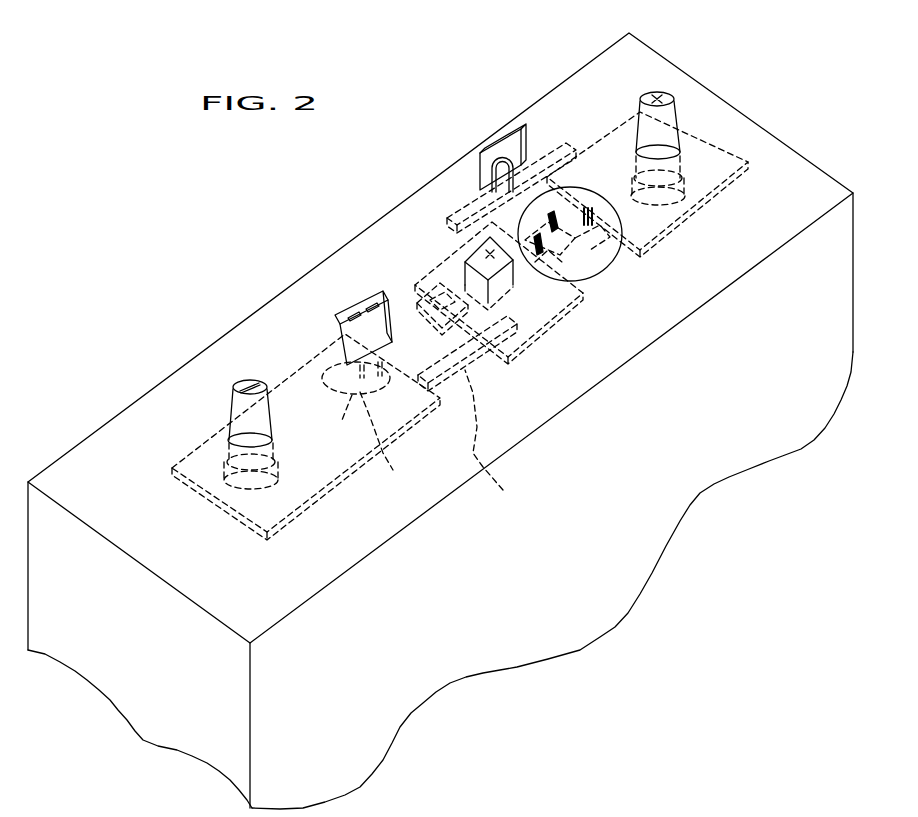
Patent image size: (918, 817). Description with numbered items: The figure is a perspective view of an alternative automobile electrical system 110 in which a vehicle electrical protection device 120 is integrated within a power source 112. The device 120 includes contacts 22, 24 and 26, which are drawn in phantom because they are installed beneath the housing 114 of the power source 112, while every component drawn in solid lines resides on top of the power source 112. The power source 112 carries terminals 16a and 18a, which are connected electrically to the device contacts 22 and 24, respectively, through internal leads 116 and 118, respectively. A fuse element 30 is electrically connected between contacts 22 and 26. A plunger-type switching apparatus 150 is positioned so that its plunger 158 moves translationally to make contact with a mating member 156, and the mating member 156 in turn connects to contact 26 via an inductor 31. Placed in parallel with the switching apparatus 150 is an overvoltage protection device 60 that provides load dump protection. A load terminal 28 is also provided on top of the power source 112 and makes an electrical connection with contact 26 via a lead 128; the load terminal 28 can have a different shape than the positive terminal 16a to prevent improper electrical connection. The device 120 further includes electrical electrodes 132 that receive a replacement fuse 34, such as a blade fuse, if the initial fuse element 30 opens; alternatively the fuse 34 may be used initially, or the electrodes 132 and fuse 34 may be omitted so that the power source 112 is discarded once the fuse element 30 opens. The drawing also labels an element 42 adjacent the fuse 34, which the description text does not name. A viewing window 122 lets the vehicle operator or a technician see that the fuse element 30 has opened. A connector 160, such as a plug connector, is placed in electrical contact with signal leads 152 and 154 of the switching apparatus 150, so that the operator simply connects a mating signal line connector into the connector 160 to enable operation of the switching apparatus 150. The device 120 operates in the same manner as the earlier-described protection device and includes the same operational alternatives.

The system 110 is at (440, 421).
The power source 112 is at (241, 643).
The housing 114 is at (417, 677).
The internal lead 116 is at (683, 167).
The internal lead 118 is at (227, 448).
The device 120 is at (167, 457).
The viewing window 122 is at (618, 280).
The lead 128 is at (570, 326).
The electrical electrodes 132 is at (547, 140).
The terminal 16a is at (680, 135).
The terminal 18a is at (240, 378).
The contact 22 is at (619, 172).
The contact 24 is at (280, 515).
The contact 26 is at (539, 312).
The load terminal 28 is at (465, 262).
The fuse element 30 is at (570, 234).
The inductor 31 is at (430, 258).
The replaceable fuse 34 is at (500, 137).
The fuse 42 is at (520, 227).
The overvoltage protection device 60 is at (494, 438).
The switching apparatus 150 is at (344, 362).
The signal lead 152 is at (337, 382).
The signal lead 154 is at (371, 448).
The mating member 156 is at (417, 284).
The plunger 158 is at (480, 371).
The connector 160 is at (352, 310).